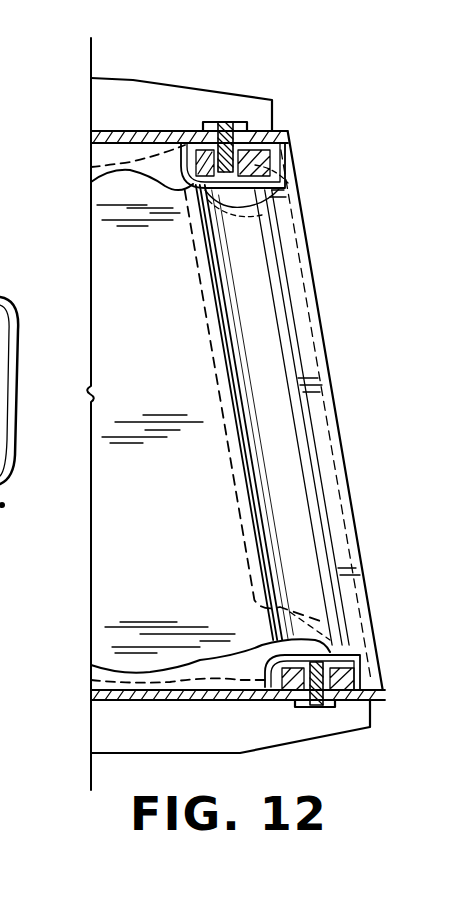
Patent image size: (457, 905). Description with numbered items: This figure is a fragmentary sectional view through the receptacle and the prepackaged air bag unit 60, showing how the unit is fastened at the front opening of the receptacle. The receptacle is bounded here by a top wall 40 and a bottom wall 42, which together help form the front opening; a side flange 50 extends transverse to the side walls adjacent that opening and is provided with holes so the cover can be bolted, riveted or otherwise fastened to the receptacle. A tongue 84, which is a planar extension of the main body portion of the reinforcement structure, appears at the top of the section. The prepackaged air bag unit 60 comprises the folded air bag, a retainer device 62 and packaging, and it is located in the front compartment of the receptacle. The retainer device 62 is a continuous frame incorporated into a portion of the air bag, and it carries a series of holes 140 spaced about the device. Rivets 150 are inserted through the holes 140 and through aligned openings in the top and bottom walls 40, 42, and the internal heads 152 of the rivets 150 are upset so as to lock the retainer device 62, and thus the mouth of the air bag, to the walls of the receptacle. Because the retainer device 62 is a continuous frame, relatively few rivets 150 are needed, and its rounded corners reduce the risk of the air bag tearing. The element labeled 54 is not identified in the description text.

The top wall 40 is at (108, 131).
The bottom wall 42 is at (127, 698).
The side flange 50 is at (0, 295).
The top frame edge 54 is at (149, 78).
The prepackaged air bag unit 60 is at (220, 387).
The retainer device 62 is at (289, 149).
The tongue 84 is at (170, 102).
The holes 140 is at (280, 190).
The rivets 150 is at (238, 122).
The internal heads 152 is at (270, 233).